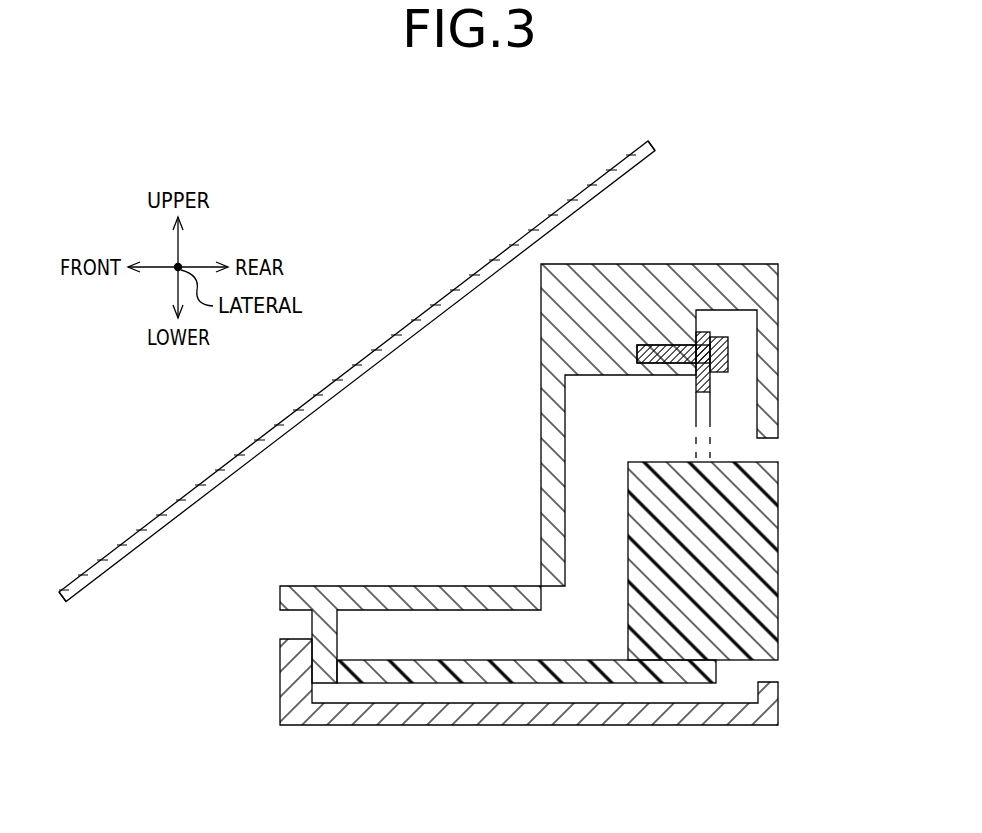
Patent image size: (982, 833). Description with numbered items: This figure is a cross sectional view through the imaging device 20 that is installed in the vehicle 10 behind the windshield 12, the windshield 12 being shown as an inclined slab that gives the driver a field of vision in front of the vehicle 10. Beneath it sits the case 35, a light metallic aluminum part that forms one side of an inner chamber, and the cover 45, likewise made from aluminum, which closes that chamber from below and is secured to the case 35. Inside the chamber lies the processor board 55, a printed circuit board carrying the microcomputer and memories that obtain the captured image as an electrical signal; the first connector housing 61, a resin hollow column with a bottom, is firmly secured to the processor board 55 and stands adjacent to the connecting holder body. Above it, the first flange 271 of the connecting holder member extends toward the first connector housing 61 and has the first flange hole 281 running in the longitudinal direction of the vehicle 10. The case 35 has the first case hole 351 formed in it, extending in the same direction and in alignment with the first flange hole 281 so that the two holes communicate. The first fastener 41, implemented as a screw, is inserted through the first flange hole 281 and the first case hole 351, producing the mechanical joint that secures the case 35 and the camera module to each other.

The vehicle 10 is at (628, 149).
The windshield 12 is at (538, 226).
The imaging device 20 is at (803, 221).
The case 35 is at (597, 283).
The first case hole 351 is at (662, 347).
The first flange 271 is at (702, 332).
The first flange hole 281 is at (687, 353).
The first fastener 41 is at (720, 345).
The cover 45 is at (497, 725).
The processor board 55 is at (579, 670).
The first connector housing 61 is at (737, 587).